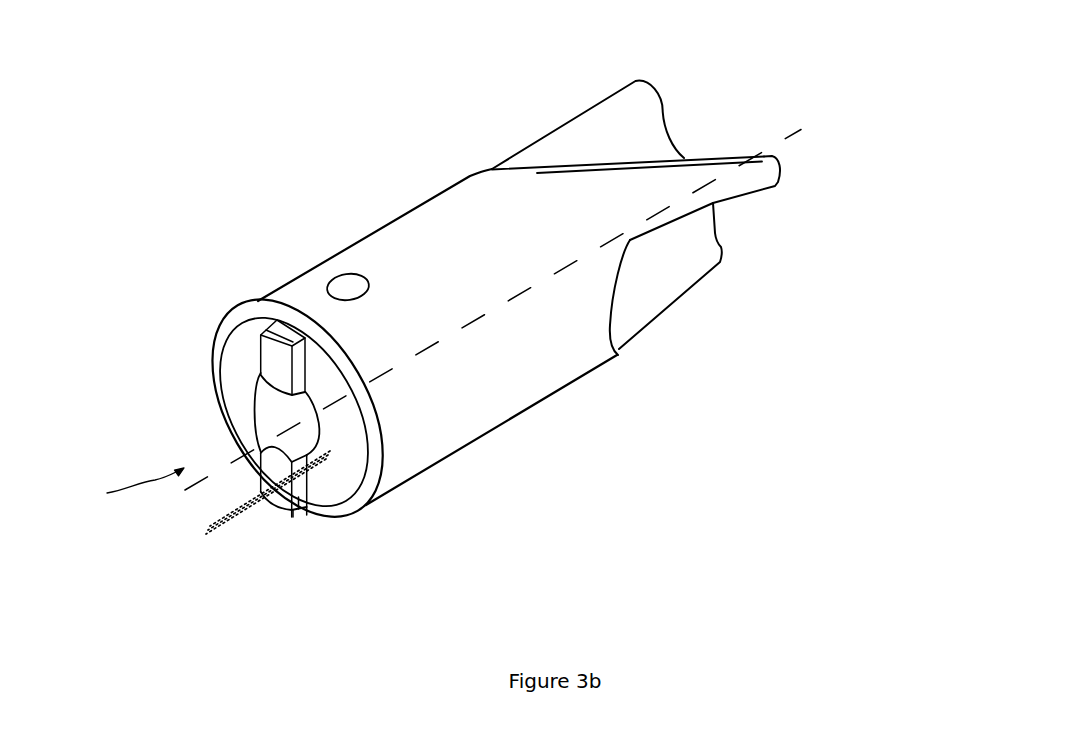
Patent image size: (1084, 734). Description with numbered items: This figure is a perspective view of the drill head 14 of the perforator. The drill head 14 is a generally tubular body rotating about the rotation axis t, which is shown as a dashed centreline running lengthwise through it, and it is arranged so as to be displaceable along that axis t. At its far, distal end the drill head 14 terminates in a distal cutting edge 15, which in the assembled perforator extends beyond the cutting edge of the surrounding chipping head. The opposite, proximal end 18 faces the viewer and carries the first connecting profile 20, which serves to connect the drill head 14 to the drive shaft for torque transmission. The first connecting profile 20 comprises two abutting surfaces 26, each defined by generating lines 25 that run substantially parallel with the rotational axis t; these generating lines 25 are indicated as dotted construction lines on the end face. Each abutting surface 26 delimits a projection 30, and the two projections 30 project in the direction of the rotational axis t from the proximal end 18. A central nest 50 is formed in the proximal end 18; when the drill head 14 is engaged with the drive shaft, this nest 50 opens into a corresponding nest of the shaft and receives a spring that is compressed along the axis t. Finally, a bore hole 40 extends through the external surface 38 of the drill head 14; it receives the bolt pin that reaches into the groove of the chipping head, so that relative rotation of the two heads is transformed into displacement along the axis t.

The drill head 14 is at (629, 406).
The distal cutting edge 15 is at (708, 157).
The proximal end 18 is at (310, 514).
The first connecting profile 20 is at (131, 490).
The generating lines 25 is at (257, 504).
The abutting surfaces 26 is at (297, 514).
The projection 30 is at (278, 360).
The external surface 38 is at (413, 270).
The bore hole 40 is at (345, 288).
The nest 50 is at (306, 406).
The rotation axis t is at (503, 309).